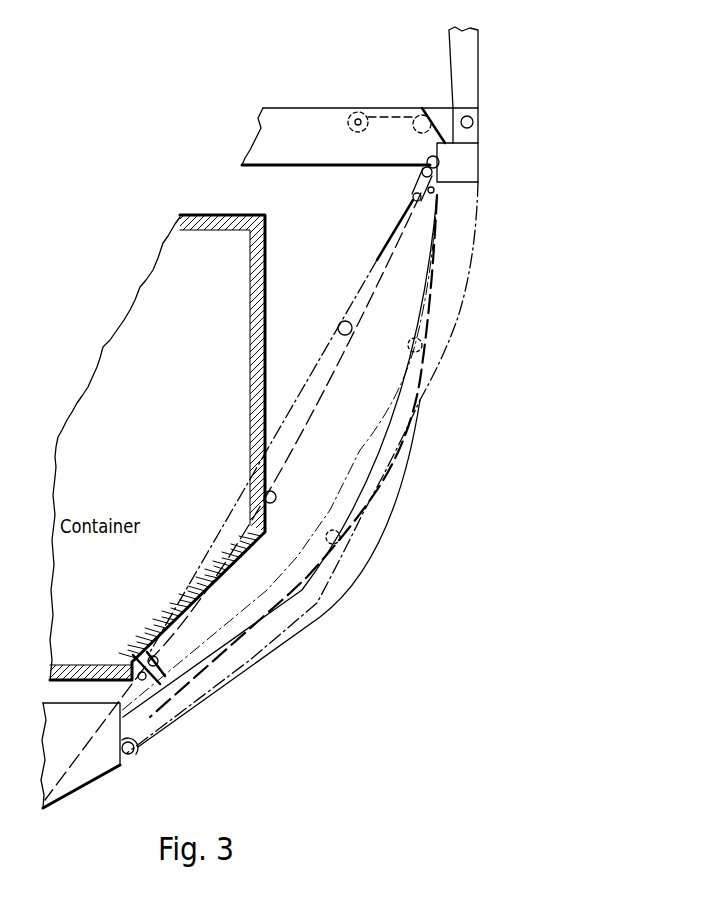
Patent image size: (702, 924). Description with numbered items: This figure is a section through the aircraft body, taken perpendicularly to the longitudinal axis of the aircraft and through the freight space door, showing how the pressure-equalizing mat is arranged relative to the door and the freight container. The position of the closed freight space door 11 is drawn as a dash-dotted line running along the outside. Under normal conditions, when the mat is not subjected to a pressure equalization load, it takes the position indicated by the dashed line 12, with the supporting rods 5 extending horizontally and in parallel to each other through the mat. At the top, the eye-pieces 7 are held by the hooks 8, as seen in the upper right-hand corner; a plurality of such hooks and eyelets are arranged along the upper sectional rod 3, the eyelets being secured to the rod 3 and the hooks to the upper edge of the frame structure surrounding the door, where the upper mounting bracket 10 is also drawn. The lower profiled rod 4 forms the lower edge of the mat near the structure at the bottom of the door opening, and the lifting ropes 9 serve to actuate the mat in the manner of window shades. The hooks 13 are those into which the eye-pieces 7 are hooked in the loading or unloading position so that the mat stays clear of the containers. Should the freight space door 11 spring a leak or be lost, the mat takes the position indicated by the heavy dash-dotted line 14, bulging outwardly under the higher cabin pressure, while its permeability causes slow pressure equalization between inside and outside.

The upper profiled rod 3 is at (430, 191).
The lower profiled rod 4 is at (170, 683).
The supporting rods 5 is at (338, 318).
The eye-pieces 7 is at (440, 184).
The hooks 8 is at (443, 164).
The lifting ropes 9 is at (425, 151).
The upper mounting bracket 10 is at (352, 107).
The closed freight space door 11 is at (456, 316).
The dashed line 12 is at (232, 567).
The hooks 13 is at (150, 657).
The heavy dash dotted line 14 is at (430, 386).